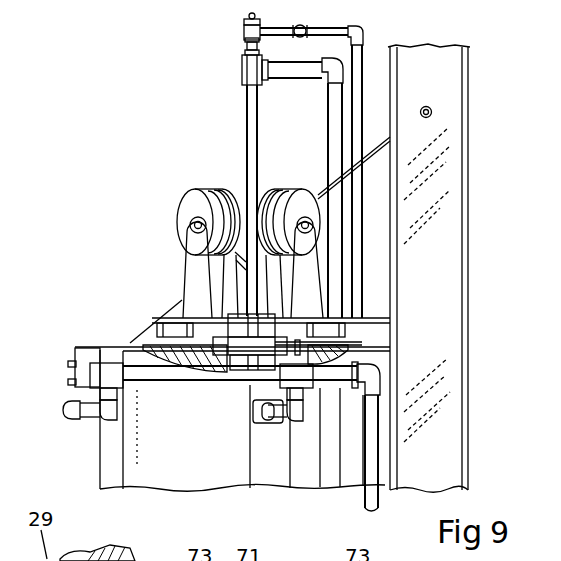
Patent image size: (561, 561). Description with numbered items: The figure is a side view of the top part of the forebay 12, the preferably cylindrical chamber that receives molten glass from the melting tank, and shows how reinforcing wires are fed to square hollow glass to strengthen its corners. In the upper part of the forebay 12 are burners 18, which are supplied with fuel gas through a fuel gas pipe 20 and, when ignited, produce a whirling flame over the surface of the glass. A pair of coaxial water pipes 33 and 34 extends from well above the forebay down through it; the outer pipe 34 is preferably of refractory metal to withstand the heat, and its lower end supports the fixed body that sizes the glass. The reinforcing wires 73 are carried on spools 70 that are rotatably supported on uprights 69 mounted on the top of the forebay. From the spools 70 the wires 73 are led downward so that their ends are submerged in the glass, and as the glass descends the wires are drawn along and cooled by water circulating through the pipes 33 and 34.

The forebay 12 is at (152, 446).
The burners 18 is at (63, 410).
The fuel gas pipe 20 is at (370, 458).
The water pipe 33 is at (247, 50).
The outer pipe 34 is at (248, 118).
The uprights 69 is at (188, 270).
The spools 70 is at (212, 212).
The wires 73 is at (238, 294).